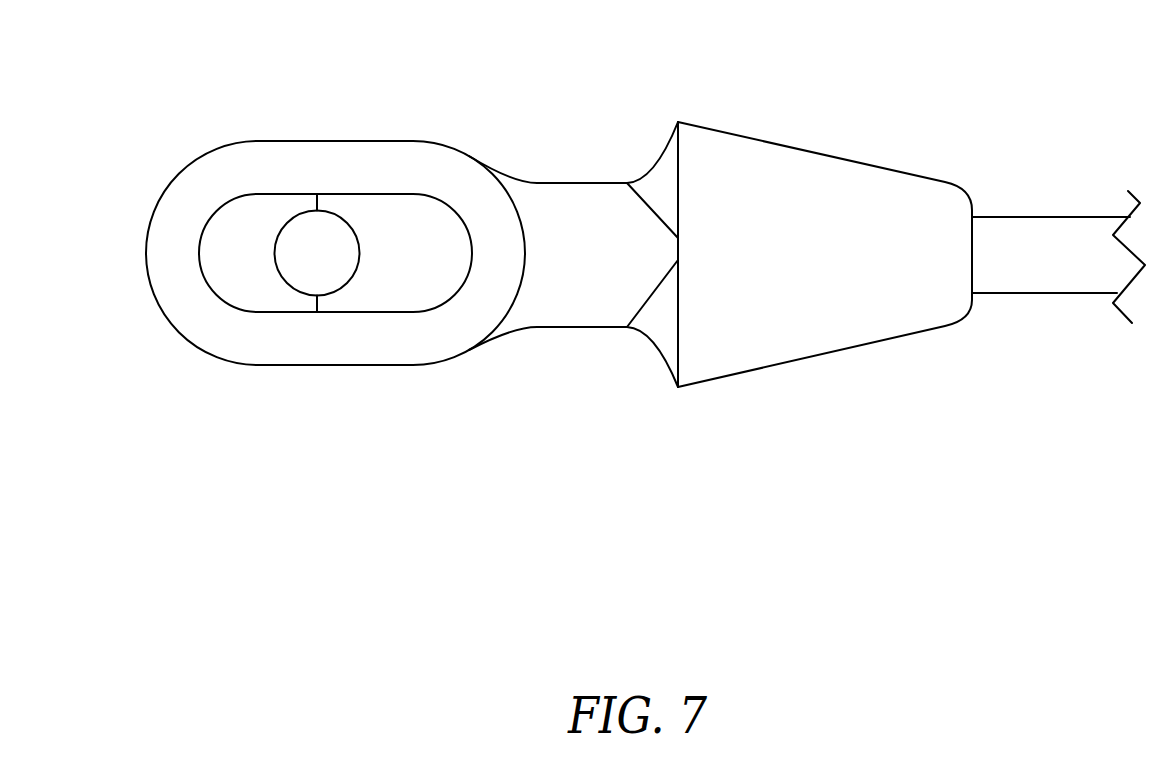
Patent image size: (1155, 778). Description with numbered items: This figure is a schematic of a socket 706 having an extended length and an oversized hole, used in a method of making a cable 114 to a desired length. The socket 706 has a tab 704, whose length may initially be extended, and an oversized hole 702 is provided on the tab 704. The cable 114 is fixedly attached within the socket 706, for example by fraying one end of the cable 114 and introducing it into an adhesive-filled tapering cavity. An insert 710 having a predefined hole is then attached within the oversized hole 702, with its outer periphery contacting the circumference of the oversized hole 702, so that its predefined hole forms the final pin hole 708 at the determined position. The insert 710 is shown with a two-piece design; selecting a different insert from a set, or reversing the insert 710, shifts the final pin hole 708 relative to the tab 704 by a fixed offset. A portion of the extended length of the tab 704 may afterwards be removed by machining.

The oversized hole 702 is at (405, 195).
The tab 704 is at (470, 172).
The socket 706 is at (574, 342).
The final pin hole 708 is at (307, 236).
The insert 710 is at (240, 218).
The cable 114 is at (1039, 225).